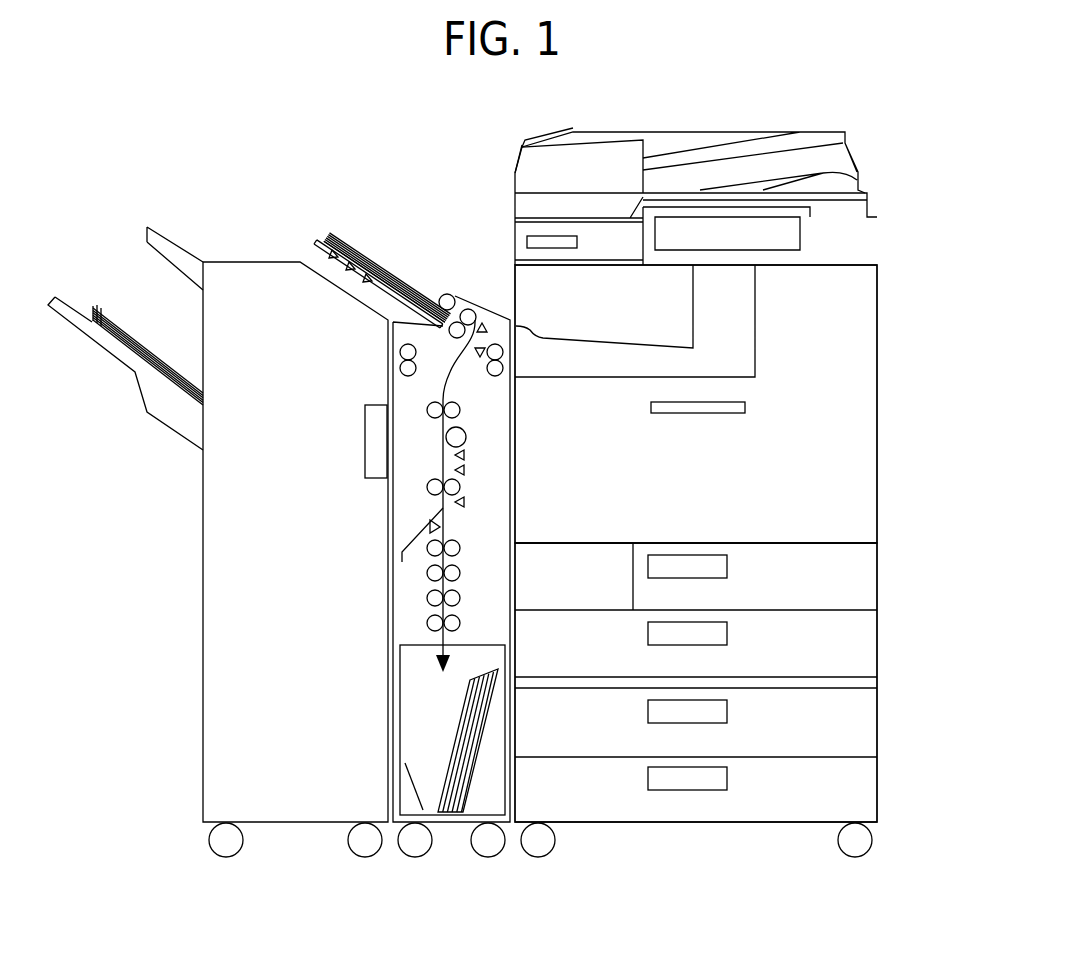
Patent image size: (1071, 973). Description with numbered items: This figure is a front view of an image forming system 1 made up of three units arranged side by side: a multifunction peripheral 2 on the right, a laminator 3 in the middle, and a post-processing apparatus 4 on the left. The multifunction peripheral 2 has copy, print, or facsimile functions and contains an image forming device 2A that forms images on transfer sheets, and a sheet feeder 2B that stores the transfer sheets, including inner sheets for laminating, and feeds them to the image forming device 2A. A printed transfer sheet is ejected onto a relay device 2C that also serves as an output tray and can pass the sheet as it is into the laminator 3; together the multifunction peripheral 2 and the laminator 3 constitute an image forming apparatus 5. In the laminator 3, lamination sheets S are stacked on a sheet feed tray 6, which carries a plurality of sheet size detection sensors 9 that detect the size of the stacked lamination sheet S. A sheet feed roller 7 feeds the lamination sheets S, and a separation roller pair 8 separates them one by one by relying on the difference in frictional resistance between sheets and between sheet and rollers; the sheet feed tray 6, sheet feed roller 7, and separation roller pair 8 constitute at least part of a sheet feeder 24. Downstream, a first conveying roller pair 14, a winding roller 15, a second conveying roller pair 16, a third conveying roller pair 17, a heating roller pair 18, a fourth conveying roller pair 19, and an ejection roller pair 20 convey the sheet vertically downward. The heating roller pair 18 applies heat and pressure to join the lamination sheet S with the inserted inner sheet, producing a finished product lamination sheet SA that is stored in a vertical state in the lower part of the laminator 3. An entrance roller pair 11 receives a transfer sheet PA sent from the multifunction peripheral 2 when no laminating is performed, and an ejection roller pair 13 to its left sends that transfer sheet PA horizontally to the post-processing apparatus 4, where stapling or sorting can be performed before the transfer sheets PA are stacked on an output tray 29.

The image forming system 1 is at (917, 133).
The multifunction peripheral 2 is at (893, 388).
The image forming device 2A is at (860, 491).
The sheet feeder 2B is at (885, 652).
The relay device 2C is at (693, 292).
The laminator 3 is at (512, 310).
The post-processing apparatus 4 is at (258, 236).
The image forming apparatus 5 is at (448, 214).
The sheet feed tray 6 is at (380, 302).
The sheet feed roller 7 is at (452, 297).
The separation roller pair 8 is at (472, 311).
The sheet size detection sensors 9 is at (348, 278).
The entrance roller pair 11 is at (492, 381).
The ejection roller pair 13 is at (409, 381).
The first conveying roller pair 14 is at (438, 401).
The winding roller 15 is at (466, 447).
The second conveying roller pair 16 is at (432, 479).
The third conveying roller pair 17 is at (462, 542).
The heating roller pair 18 is at (462, 567).
The fourth conveying roller pair 19 is at (462, 592).
The ejection roller pair 20 is at (462, 617).
The sheet feeder 24 is at (420, 270).
The output tray 29 is at (118, 372).
The lamination sheet S is at (368, 245).
The transfer sheet PA is at (122, 318).
The finished product lamination sheet SA is at (460, 722).